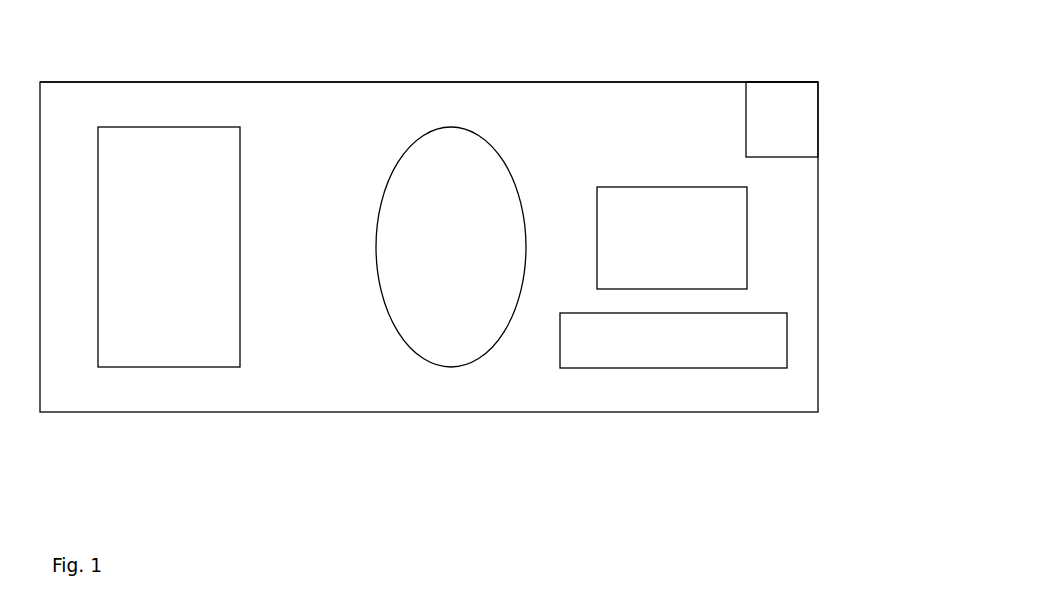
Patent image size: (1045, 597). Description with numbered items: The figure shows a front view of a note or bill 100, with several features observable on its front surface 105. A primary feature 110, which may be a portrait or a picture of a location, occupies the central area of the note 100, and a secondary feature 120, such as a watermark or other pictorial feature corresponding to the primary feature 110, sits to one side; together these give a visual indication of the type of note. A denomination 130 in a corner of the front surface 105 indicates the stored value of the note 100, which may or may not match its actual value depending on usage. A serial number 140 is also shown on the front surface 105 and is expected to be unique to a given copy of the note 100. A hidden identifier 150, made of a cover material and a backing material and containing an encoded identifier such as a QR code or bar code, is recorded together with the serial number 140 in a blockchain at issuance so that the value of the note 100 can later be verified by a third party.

The note 100 is at (152, 64).
The front surface 105 is at (429, 86).
The primary feature 110 is at (452, 368).
The secondary feature 120 is at (167, 369).
The denomination 130 is at (818, 122).
The serial number 140 is at (673, 368).
The hidden identifier 150 is at (747, 240).